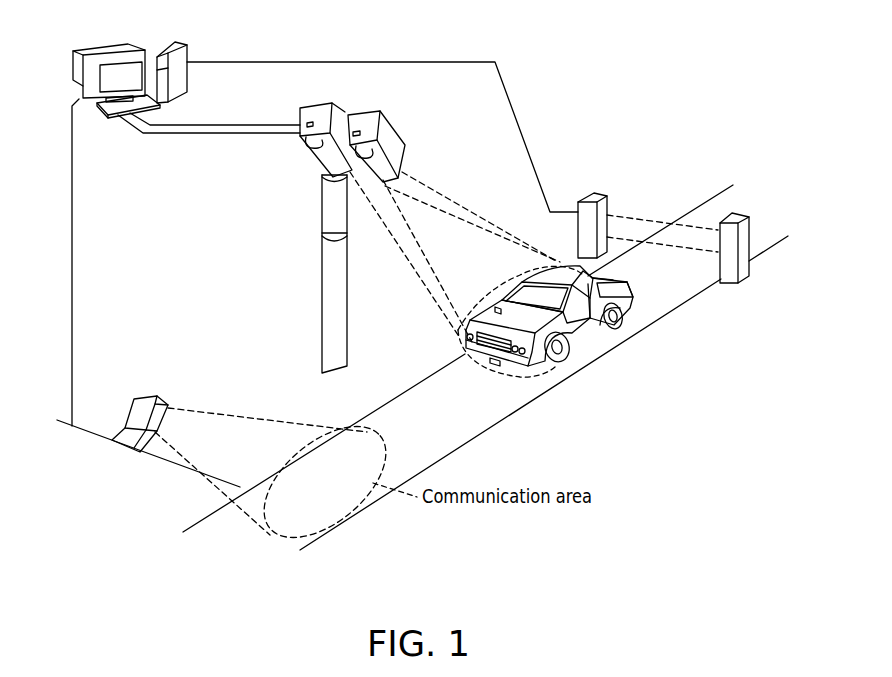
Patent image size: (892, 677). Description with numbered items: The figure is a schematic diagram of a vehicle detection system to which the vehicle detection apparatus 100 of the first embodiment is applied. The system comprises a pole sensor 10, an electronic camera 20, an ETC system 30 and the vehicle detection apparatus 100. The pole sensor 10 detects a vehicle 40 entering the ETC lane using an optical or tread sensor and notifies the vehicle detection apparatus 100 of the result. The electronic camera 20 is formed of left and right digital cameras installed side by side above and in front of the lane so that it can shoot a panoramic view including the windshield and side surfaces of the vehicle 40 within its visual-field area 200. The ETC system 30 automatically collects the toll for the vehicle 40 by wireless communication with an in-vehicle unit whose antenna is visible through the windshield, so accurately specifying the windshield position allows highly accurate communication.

The vehicle detection apparatus 100 is at (109, 44).
The electronic camera 20 is at (397, 137).
The pole sensor 10 is at (600, 193).
The ETC system 30 is at (157, 394).
The vehicle 40 is at (628, 296).
The visual-field area 200 is at (583, 275).